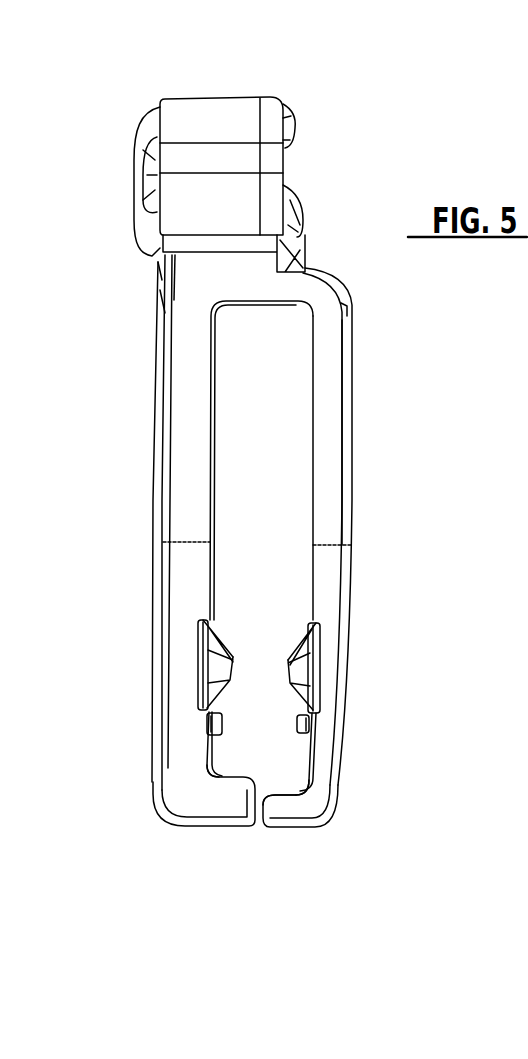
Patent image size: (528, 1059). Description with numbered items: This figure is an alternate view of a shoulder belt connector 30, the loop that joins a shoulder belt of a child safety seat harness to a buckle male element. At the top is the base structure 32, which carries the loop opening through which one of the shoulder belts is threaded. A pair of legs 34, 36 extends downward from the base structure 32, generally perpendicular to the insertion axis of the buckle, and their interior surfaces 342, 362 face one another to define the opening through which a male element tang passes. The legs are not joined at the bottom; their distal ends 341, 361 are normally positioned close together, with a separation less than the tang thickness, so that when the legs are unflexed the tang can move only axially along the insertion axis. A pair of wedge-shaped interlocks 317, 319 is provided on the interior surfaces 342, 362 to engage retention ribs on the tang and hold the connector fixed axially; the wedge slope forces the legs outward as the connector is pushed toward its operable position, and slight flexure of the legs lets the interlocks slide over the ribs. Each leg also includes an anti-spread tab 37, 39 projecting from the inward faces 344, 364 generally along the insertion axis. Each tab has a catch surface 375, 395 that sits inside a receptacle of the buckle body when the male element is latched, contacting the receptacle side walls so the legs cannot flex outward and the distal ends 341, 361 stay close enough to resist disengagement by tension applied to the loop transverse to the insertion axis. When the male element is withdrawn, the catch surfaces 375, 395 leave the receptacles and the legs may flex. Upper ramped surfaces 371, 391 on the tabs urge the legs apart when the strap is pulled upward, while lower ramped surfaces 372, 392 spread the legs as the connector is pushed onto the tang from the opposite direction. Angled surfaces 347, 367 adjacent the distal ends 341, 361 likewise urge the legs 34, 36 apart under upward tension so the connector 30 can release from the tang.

The shoulder belt connector 30 is at (354, 134).
The base structure 32 is at (188, 92).
The leg 34 is at (184, 522).
The leg 36 is at (371, 526).
The anti-spread tab 37 is at (153, 622).
The anti-spread tab 39 is at (387, 634).
The wedge-shaped interlock 317 is at (217, 723).
The wedge-shaped interlock 319 is at (307, 731).
The distal end 341 is at (154, 806).
The interior surface 342 is at (278, 460).
The inward face 344 is at (187, 433).
The angled surface 347 is at (252, 781).
The distal end 361 is at (362, 786).
The interior surface 362 is at (302, 427).
The inward face 364 is at (338, 385).
The angled surface 367 is at (278, 784).
The upper ramped surface 371 is at (236, 628).
The lower ramped surface 372 is at (236, 692).
The catch surface 375 is at (200, 675).
The upper ramped surface 391 is at (292, 628).
The lower ramped surface 392 is at (280, 708).
The catch surface 395 is at (316, 683).